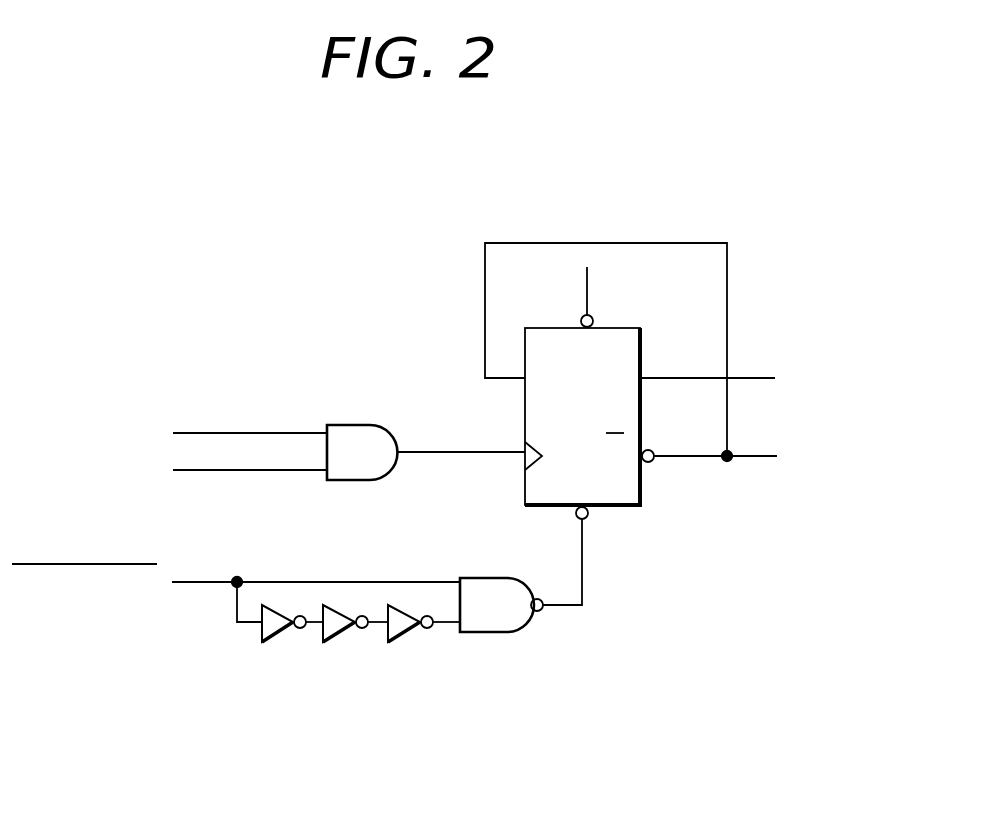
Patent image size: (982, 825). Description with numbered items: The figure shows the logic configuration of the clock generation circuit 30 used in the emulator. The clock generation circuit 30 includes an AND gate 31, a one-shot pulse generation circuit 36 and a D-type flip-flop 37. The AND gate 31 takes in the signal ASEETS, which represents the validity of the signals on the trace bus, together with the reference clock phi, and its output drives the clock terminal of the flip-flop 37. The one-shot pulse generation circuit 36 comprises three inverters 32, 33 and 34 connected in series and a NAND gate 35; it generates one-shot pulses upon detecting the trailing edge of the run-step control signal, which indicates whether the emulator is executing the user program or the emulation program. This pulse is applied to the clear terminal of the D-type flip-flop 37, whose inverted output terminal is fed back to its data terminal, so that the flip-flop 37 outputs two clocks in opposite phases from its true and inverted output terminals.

The clock generation circuit 30 is at (205, 253).
The AND gate 31 is at (367, 424).
The inverter 32 is at (283, 643).
The inverter 33 is at (345, 643).
The inverter 34 is at (424, 651).
The NAND gate 35 is at (503, 633).
The one-shot pulse generation circuit 36 is at (419, 701).
The D-type flip-flop 37 is at (644, 506).